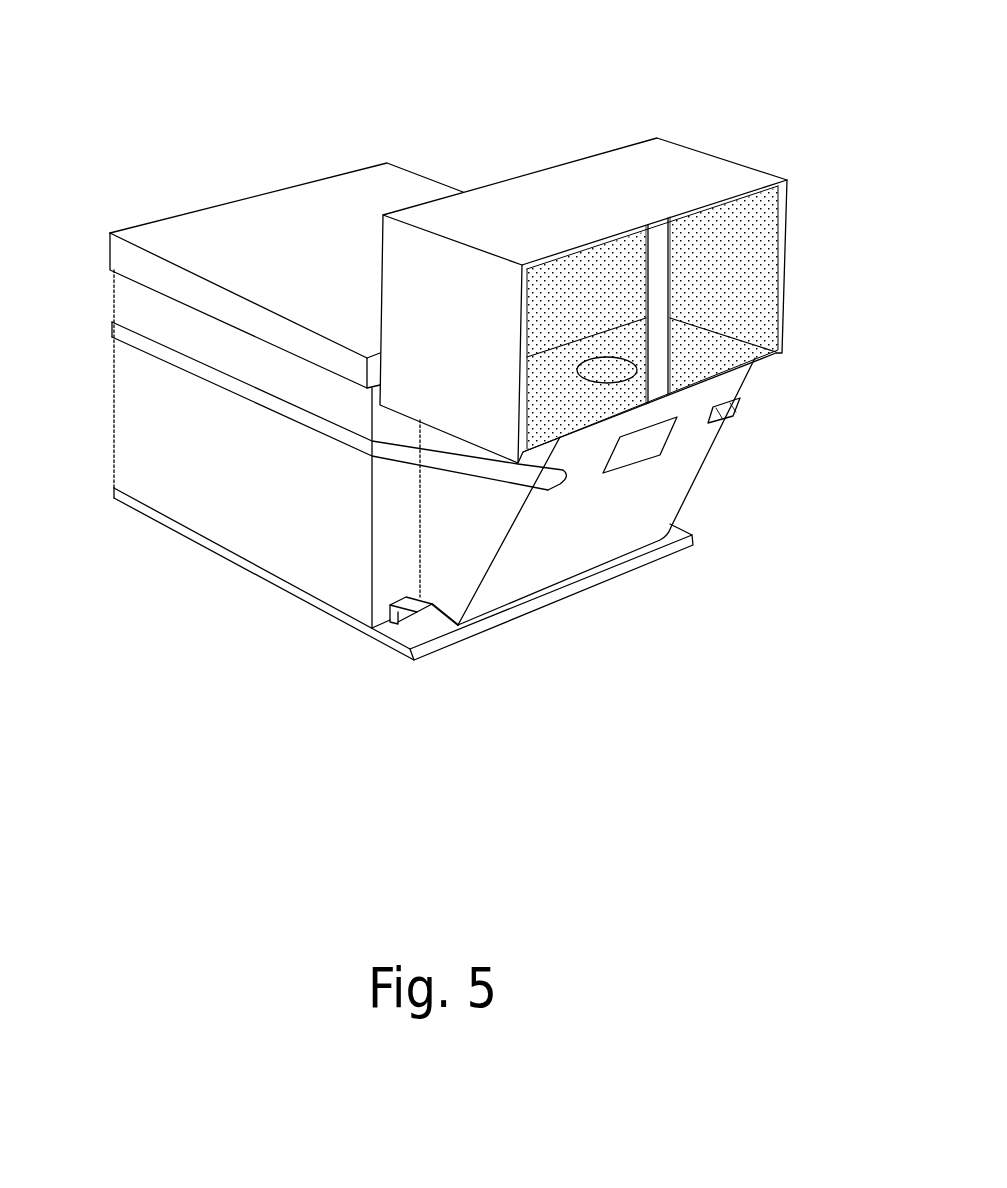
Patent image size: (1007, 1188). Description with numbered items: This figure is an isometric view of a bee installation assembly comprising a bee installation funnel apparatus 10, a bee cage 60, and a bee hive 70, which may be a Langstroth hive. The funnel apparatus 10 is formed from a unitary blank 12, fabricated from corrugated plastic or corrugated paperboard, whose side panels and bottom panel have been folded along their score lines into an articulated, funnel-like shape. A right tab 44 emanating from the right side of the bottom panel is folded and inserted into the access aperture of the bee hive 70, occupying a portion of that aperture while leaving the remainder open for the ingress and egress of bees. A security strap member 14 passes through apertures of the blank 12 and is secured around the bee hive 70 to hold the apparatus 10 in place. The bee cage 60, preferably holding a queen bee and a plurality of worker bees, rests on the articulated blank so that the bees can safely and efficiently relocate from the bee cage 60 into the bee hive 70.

The bee installation funnel apparatus 10 is at (560, 623).
The blank 12 is at (612, 523).
The security strap member 14 is at (200, 378).
The right tab 44 is at (417, 627).
The bee cage 60 is at (610, 142).
The bee hive 70 is at (288, 188).